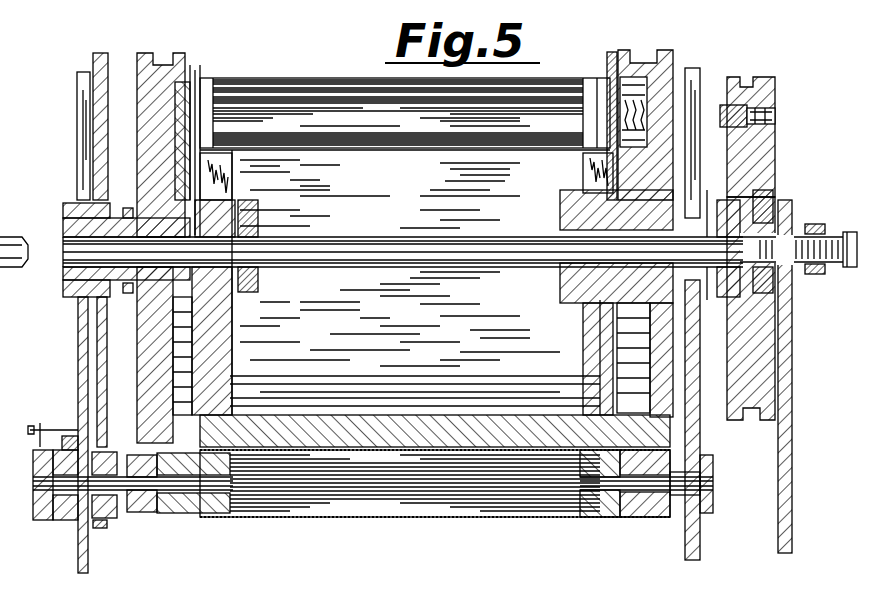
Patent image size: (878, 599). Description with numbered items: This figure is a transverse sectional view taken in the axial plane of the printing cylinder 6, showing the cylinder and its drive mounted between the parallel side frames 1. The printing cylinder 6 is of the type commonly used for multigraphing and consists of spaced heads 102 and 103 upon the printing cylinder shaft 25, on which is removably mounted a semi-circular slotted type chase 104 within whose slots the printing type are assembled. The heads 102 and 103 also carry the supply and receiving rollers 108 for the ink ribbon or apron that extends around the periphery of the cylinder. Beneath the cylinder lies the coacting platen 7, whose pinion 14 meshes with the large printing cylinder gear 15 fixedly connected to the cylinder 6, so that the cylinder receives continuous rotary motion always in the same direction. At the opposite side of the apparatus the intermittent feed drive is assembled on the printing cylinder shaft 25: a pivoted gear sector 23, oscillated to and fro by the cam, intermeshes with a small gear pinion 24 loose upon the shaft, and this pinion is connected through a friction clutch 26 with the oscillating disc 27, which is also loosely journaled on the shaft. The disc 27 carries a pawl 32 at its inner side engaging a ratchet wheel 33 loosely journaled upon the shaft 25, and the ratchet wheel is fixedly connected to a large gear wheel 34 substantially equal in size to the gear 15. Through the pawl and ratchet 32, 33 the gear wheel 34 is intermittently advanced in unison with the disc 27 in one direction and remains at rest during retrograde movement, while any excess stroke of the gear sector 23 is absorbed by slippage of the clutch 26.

The side frame 1 is at (78, 90).
The printing cylinder gear 15 is at (106, 60).
The supply and receiving rollers 108 is at (292, 110).
The large gear wheel 34 is at (665, 56).
The oscillating disc 27 is at (745, 97).
The pawl 32 is at (752, 118).
The ratchet wheel 33 is at (763, 167).
The gear pinion 24 is at (778, 218).
The printing cylinder shaft 25 is at (500, 266).
The head 102 is at (228, 366).
The head 103 is at (598, 332).
The printing cylinder 6 is at (454, 392).
The type chase 104 is at (330, 420).
The platen 7 is at (545, 520).
The friction clutch 26 is at (770, 295).
The gear sector 23 is at (793, 478).
The pinion 14 is at (107, 528).